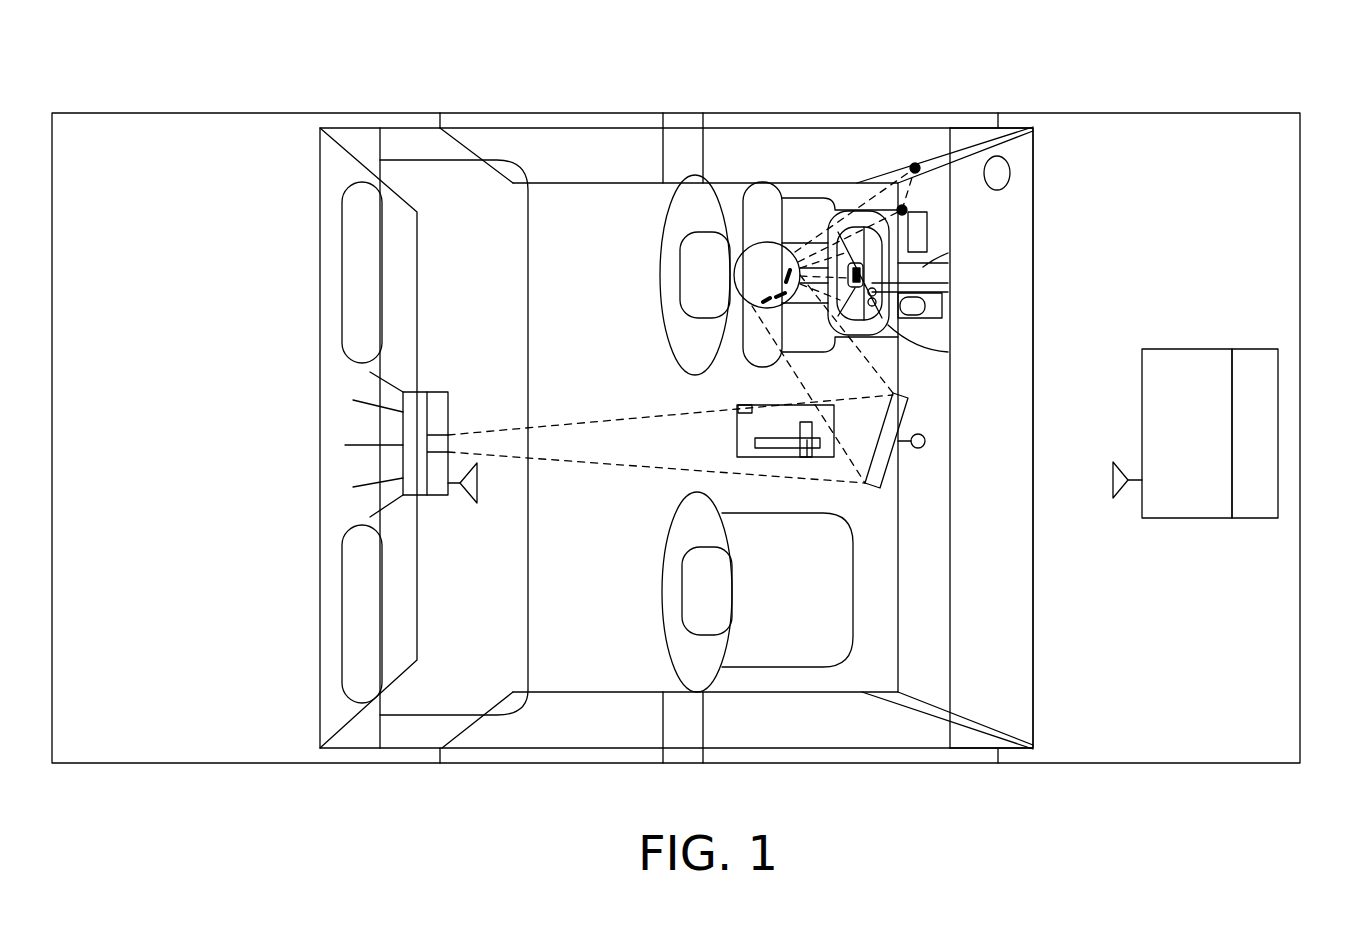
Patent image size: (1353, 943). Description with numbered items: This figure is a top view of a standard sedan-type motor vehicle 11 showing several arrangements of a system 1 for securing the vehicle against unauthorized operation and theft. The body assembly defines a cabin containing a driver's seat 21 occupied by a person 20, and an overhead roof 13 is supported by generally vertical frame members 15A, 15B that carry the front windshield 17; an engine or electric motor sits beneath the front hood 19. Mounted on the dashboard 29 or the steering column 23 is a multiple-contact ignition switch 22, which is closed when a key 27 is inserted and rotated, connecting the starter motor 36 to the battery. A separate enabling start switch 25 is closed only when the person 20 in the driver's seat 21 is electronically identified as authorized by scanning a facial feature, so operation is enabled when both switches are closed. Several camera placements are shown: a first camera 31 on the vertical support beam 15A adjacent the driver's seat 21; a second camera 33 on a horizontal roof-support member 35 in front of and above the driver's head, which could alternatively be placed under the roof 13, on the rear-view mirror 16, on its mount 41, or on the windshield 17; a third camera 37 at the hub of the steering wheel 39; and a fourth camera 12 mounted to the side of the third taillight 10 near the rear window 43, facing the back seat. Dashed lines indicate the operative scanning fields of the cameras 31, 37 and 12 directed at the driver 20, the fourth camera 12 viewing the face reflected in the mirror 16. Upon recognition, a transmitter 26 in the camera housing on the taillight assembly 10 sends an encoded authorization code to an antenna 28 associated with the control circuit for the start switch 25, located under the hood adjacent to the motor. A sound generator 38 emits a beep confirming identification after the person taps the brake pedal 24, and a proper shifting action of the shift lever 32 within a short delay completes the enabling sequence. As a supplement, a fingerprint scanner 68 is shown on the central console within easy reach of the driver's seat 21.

The system 1 is at (1146, 72).
The third taillight 10 is at (410, 403).
The motor vehicle 11 is at (287, 112).
The fourth camera 12 is at (438, 437).
The overhead roof 13 is at (575, 661).
The vertical support beam 15A is at (993, 136).
The frame member 15B is at (985, 730).
The rear-view mirror 16 is at (878, 483).
The front windshield 17 is at (943, 592).
The front hood 19 is at (1174, 217).
The person 20 is at (739, 289).
The driver's seat 21 is at (712, 224).
The ignition switch 22 is at (948, 290).
The steering column 23 is at (948, 263).
The brake pedal 24 is at (918, 227).
The start switch 25 is at (1203, 451).
The transmitter 26 is at (477, 490).
The key 27 is at (942, 318).
The antenna 28 is at (1113, 488).
The dashboard 29 is at (949, 140).
The first camera 31 is at (912, 165).
The shift lever 32 is at (806, 452).
The second camera 33 is at (900, 207).
The horizontal roof-support member 35 is at (902, 679).
The starter motor 36 is at (1272, 451).
The third camera 37 is at (845, 335).
The sound generator 38 is at (1000, 176).
The steering wheel 39 is at (862, 213).
The mount 41 is at (926, 441).
The rear window 43 is at (414, 280).
The fingerprint scanner 68 is at (745, 405).